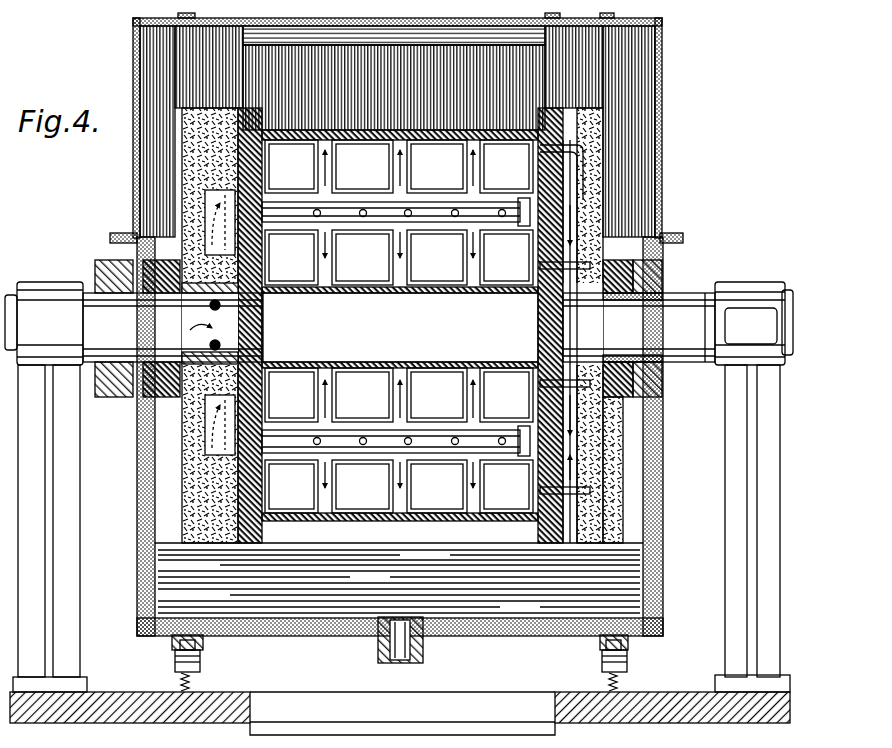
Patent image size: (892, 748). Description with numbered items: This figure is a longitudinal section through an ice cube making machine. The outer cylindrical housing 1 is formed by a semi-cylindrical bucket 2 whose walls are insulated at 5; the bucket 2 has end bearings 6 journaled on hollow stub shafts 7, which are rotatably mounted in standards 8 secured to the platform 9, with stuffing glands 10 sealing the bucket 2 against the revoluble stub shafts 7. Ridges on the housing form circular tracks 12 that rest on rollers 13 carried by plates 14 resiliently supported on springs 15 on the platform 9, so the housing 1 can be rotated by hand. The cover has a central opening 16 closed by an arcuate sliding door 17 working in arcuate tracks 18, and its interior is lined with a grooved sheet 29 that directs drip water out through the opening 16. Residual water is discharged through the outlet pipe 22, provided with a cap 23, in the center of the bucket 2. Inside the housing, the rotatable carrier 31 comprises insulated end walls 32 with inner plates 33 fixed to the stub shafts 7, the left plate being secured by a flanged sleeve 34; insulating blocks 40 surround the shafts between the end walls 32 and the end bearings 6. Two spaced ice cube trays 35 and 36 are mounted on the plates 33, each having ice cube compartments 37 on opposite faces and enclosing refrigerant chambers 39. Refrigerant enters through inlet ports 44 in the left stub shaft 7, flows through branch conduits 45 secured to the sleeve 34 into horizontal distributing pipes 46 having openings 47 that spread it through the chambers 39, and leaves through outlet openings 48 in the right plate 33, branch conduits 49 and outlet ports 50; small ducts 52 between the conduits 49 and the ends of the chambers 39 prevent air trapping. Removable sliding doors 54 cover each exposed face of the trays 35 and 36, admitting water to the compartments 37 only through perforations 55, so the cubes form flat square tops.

The outer cylindrical housing 1 is at (669, 120).
The semi-cylindrical bucket 2 is at (503, 590).
The insulation 5 is at (633, 18).
The end bearing 6 is at (413, 247).
The hollow stub shaft 7 is at (103, 307).
The standard 8 is at (67, 516).
The platform 9 is at (257, 691).
The stuffing gland 10 is at (104, 258).
The track 12 is at (178, 17).
The roller 13 is at (175, 657).
The plate 14 is at (202, 662).
The spring 15 is at (200, 686).
The central opening 16 is at (323, 23).
The arcuate sliding door 17 is at (390, 22).
The arcuate track 18 is at (178, 36).
The outlet pipe 22 is at (420, 636).
The cap 23 is at (383, 660).
The sheet 29 is at (600, 77).
The rotatable carrier 31 is at (372, 522).
The insulated end wall 32 is at (182, 132).
The inner plate 33 is at (182, 163).
The flanged sleeve 34 is at (210, 378).
The ice cube tray 35 is at (400, 327).
The ice cube tray 36 is at (338, 370).
The ice cube compartment 37 is at (420, 174).
The refrigerant chamber 39 is at (412, 240).
The insulating block 40 is at (134, 398).
The inlet port 44 is at (252, 328).
The branch conduit 45 is at (290, 226).
The distributing pipe 46 is at (482, 437).
The opening 47 is at (395, 222).
The outlet opening 48 is at (540, 193).
The branch conduit 49 is at (603, 228).
The outlet port 50 is at (590, 322).
The duct 52 is at (582, 152).
The sliding door 54 is at (340, 372).
The perforation 55 is at (435, 135).